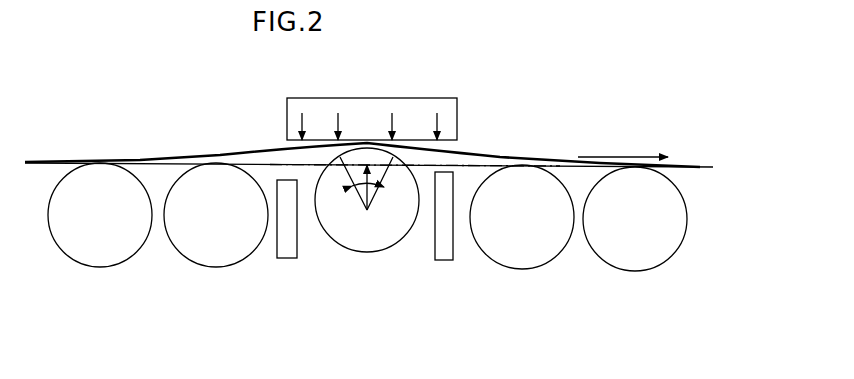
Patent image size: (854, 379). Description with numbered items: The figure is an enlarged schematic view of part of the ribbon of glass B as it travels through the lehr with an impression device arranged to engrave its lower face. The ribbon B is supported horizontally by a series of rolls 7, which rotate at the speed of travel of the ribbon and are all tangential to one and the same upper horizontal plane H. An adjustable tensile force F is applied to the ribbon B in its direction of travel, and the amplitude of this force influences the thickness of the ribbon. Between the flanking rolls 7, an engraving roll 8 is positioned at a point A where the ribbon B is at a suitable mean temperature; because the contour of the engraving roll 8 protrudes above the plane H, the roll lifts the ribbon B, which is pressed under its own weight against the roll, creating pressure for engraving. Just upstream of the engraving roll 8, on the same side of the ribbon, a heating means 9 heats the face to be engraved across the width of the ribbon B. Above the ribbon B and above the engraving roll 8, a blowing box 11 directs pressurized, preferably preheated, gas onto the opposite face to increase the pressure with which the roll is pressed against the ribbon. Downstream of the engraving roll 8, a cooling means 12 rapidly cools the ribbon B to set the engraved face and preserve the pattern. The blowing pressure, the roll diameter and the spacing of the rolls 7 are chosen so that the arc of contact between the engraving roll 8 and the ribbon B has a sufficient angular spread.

The rolls 7 is at (130, 262).
The engraving roll 8 is at (375, 252).
The heating means 9 is at (287, 258).
The blowing box 11 is at (457, 115).
The cooling means 12 is at (445, 260).
The ribbon B is at (133, 160).
The upper horizontal plane H is at (193, 160).
The point A is at (287, 145).
The tensile force F is at (612, 150).